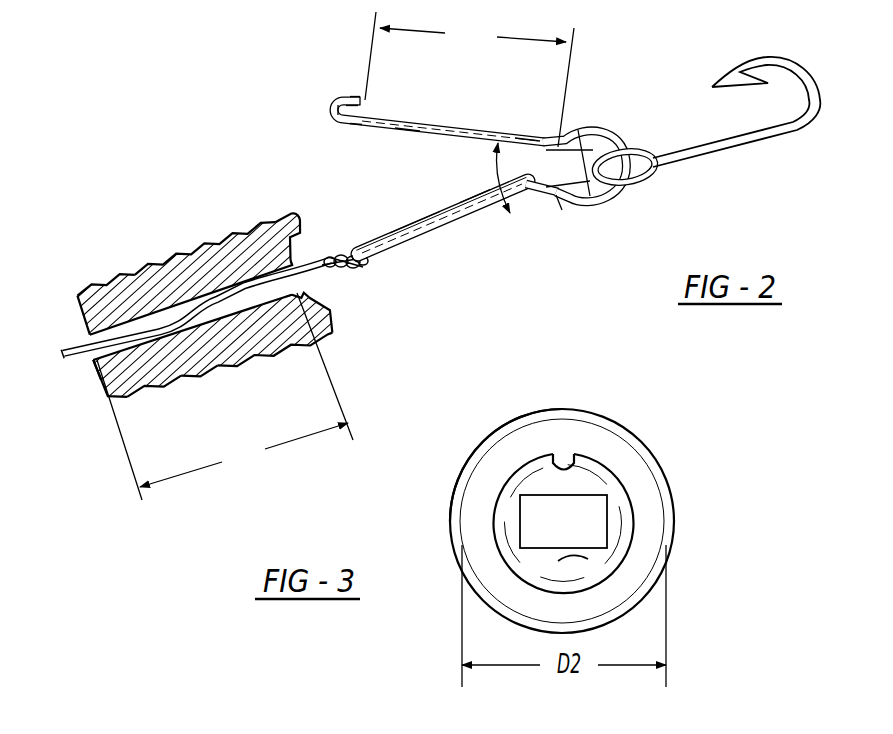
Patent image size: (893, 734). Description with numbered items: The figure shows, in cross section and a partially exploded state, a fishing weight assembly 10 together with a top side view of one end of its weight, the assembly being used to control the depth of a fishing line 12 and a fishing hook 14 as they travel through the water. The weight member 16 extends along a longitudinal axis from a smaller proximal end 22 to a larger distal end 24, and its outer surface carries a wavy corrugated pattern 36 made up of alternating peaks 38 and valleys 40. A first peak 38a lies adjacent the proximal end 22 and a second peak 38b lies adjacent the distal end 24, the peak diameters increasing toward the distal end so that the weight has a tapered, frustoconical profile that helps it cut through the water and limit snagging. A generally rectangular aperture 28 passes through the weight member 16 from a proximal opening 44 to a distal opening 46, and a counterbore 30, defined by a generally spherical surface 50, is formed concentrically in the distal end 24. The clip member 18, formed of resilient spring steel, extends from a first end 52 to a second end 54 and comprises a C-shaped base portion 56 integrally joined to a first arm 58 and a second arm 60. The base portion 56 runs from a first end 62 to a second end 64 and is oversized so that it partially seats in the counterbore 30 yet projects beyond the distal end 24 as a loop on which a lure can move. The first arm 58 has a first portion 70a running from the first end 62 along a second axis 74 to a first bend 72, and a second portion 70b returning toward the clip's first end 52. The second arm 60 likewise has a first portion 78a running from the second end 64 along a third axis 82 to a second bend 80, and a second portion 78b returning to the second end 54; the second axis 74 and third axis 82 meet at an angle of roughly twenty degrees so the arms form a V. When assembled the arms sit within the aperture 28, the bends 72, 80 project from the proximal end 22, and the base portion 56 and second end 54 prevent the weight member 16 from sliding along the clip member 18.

In FIG. 2, the fishing weight assembly 10 is at (410, 269).
In FIG. 2, the fishing line 12 is at (72, 352).
In FIG. 2, the fishing hook 14 is at (707, 152).
In FIG. 2, the weight member 16 is at (337, 314).
In FIG. 3, the weight member 16 is at (585, 495).
In FIG. 2, the clip member 18 is at (411, 91).
In FIG. 2, the proximal end 22 is at (105, 395).
In FIG. 2, the distal end 24 is at (295, 228).
In FIG. 3, the distal end 24 is at (636, 473).
In FIG. 2, the aperture 28 is at (217, 307).
In FIG. 3, the aperture 28 is at (537, 505).
In FIG. 2, the counterbore 30 is at (320, 304).
In FIG. 3, the counterbore 30 is at (570, 466).
In FIG. 2, the corrugated pattern 36 is at (137, 397).
In FIG. 2, the peaks 38 is at (247, 222).
In FIG. 2, the first peak 38a is at (76, 293).
In FIG. 3, the second peak 38b is at (499, 428).
In FIG. 2, the valleys 40 is at (223, 370).
In FIG. 2, the proximal opening 44 is at (96, 363).
In FIG. 2, the distal opening 46 is at (325, 253).
In FIG. 3, the distal opening 46 is at (543, 548).
In FIG. 2, the surface 50 is at (302, 252).
In FIG. 3, the surface 50 is at (573, 558).
In FIG. 2, the first end of the clip member 52 is at (530, 182).
In FIG. 2, the second end of the clip member 54 is at (362, 100).
In FIG. 2, the base portion 56 is at (605, 155).
In FIG. 2, the first arm 58 is at (472, 191).
In FIG. 2, the second arm 60 is at (410, 148).
In FIG. 2, the first end of the base portion 62 is at (560, 214).
In FIG. 2, the second end of the base portion 64 is at (552, 137).
In FIG. 2, the first portion of the first arm 70a is at (440, 240).
In FIG. 2, the second portion of the first arm 70b is at (444, 207).
In FIG. 2, the first bend 72 is at (356, 270).
In FIG. 2, the second axis 74 is at (586, 188).
In FIG. 2, the first portion of the second arm 78a is at (360, 126).
In FIG. 2, the second portion of the second arm 78b is at (349, 97).
In FIG. 2, the second bend 80 is at (334, 108).
In FIG. 2, the third axis 82 is at (580, 140).